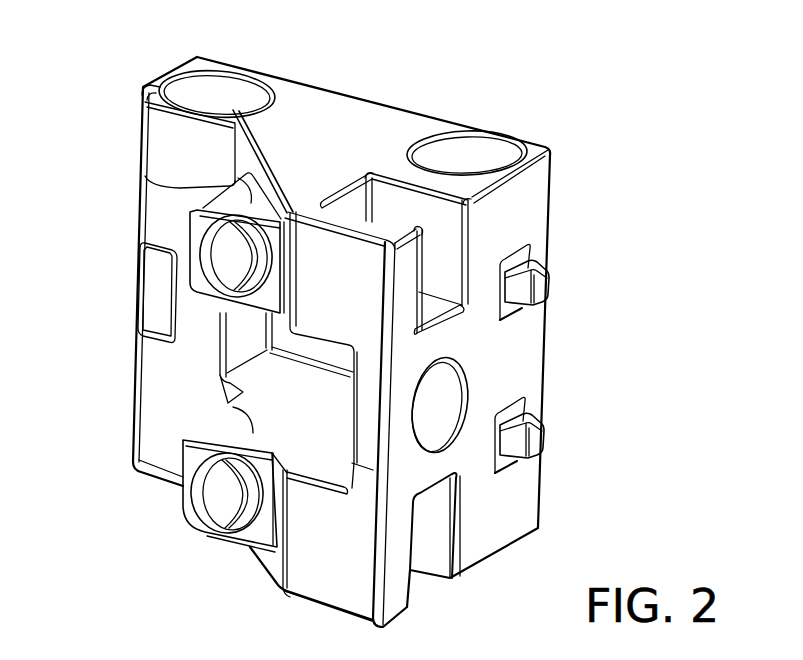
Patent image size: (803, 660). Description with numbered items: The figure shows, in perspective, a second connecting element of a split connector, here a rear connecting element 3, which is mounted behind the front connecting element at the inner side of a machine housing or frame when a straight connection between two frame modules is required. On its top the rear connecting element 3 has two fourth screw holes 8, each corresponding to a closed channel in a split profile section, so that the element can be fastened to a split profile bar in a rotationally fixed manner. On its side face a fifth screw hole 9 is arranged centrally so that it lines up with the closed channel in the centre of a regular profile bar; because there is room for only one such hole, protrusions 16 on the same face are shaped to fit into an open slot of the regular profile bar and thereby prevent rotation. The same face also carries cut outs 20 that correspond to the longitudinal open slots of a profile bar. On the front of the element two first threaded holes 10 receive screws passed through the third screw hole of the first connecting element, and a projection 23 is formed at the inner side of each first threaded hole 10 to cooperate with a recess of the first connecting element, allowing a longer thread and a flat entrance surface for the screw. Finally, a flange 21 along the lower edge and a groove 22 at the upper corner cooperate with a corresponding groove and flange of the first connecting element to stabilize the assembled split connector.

The rear connecting element 3 is at (341, 342).
The fourth screw hole 8 is at (215, 97).
The fifth screw hole 9 is at (432, 405).
The first threaded hole 10 is at (253, 250).
The protrusion 16 is at (547, 290).
The cut out 20 is at (387, 210).
The flange 21 is at (377, 601).
The groove 22 is at (146, 115).
The projection 23 is at (248, 200).